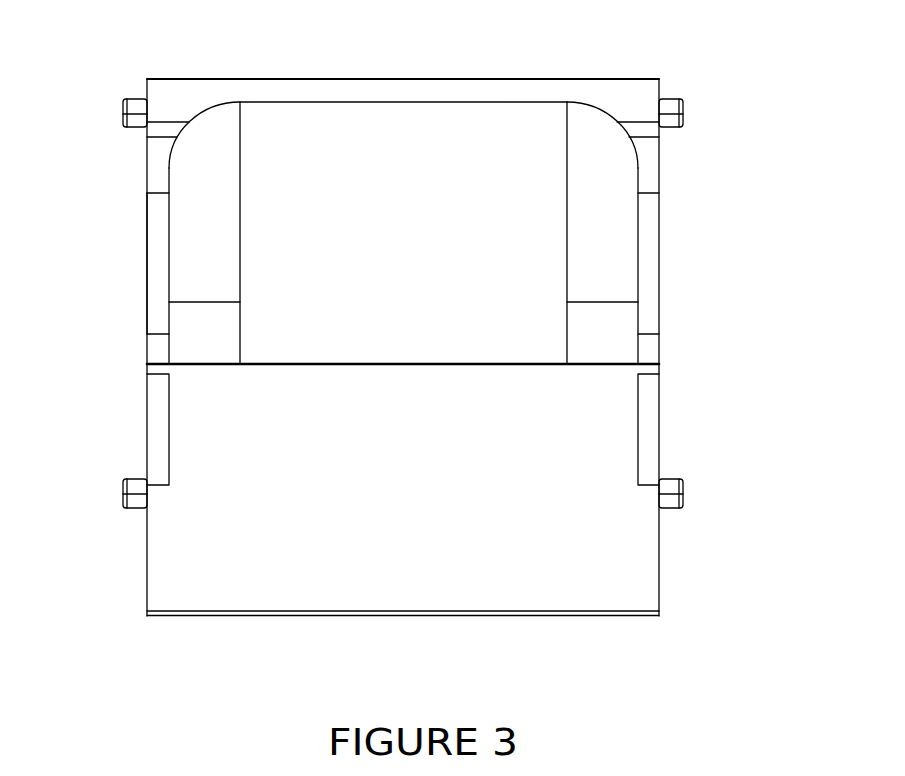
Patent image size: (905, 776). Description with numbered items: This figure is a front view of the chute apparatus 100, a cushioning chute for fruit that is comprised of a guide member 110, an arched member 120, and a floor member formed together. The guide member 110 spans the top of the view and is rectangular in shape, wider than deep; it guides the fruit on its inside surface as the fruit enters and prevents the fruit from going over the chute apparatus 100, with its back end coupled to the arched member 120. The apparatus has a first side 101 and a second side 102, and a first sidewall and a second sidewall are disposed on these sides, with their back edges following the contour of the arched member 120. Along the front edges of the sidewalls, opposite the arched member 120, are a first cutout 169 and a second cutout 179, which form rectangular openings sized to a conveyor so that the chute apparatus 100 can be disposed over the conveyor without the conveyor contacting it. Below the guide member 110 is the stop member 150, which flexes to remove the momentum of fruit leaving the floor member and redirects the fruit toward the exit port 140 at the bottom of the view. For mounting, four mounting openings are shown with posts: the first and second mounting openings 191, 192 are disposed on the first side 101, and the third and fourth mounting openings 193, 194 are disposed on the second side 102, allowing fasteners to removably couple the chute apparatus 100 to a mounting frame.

The chute apparatus 100 is at (450, 359).
The guide member 110 is at (490, 58).
The first side 101 is at (157, 160).
The second side 102 is at (650, 227).
The first cutout 169 is at (137, 247).
The arched member 120 is at (137, 304).
The second cutout 179 is at (667, 302).
The stop member 150 is at (127, 570).
The exit port 140 is at (530, 632).
The first mounting opening 191 is at (145, 100).
The second mounting opening 192 is at (145, 480).
The third mounting opening 193 is at (662, 128).
The fourth mounting opening 194 is at (661, 508).